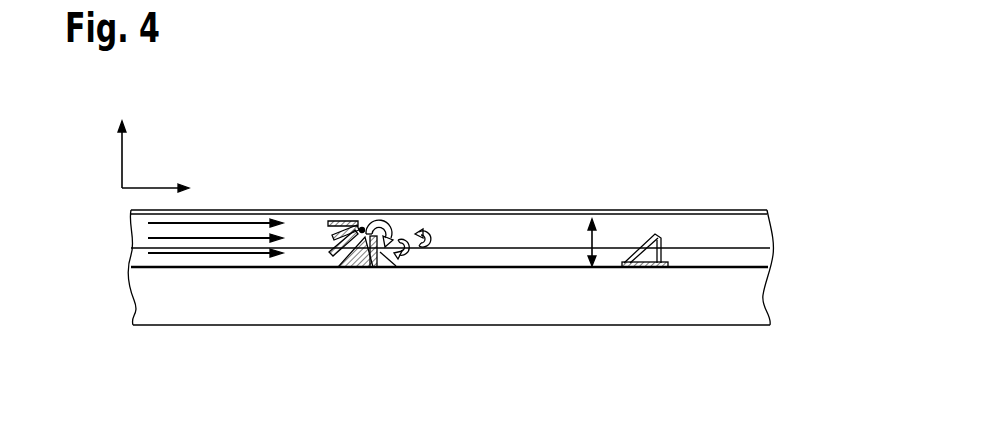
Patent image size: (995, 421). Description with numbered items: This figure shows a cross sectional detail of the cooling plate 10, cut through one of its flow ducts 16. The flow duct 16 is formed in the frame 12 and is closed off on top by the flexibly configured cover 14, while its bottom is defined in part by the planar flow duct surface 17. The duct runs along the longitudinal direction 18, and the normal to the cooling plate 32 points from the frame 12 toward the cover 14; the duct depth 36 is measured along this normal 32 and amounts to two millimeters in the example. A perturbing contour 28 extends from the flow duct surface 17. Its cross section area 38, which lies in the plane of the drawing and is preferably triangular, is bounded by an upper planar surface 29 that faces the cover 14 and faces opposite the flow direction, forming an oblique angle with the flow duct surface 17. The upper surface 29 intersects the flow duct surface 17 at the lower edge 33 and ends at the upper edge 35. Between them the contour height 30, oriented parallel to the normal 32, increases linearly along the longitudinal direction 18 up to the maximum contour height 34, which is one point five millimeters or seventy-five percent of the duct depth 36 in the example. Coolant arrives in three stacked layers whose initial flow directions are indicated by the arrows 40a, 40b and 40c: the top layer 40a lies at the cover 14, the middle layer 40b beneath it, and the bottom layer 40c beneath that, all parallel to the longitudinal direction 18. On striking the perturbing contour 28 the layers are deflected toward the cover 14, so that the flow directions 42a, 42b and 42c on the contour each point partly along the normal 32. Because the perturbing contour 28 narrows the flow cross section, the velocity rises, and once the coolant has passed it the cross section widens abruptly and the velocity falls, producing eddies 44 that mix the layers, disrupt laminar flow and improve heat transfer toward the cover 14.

The cooling plate 10 is at (519, 98).
The frame 12 is at (702, 308).
The flexibly configured cover 14 is at (707, 210).
The flow duct 16 is at (762, 233).
The flow duct surface 17 is at (463, 267).
The longitudinal direction 18 is at (147, 188).
The perturbing contour 28 is at (374, 298).
The upper planar surface 29 is at (642, 243).
The contour height 30 is at (372, 263).
The normal to the cooling plate 32 is at (122, 158).
The lower edge 33 is at (592, 292).
The maximum contour height 34 is at (396, 266).
The upper edge 35 is at (670, 212).
The duct depth 36 is at (597, 237).
The cross section area 38 is at (366, 228).
The initial flow direction of the top flow layer 40a is at (158, 222).
The initial flow direction of the middle flow layer 40b is at (193, 236).
The initial flow direction of the bottom flow layer 40c is at (240, 253).
The flow direction on the perturbing contour 42a is at (358, 227).
The flow direction on the perturbing contour 42b is at (354, 224).
The flow direction on the perturbing contour 42c is at (331, 236).
The eddies 44 is at (405, 240).